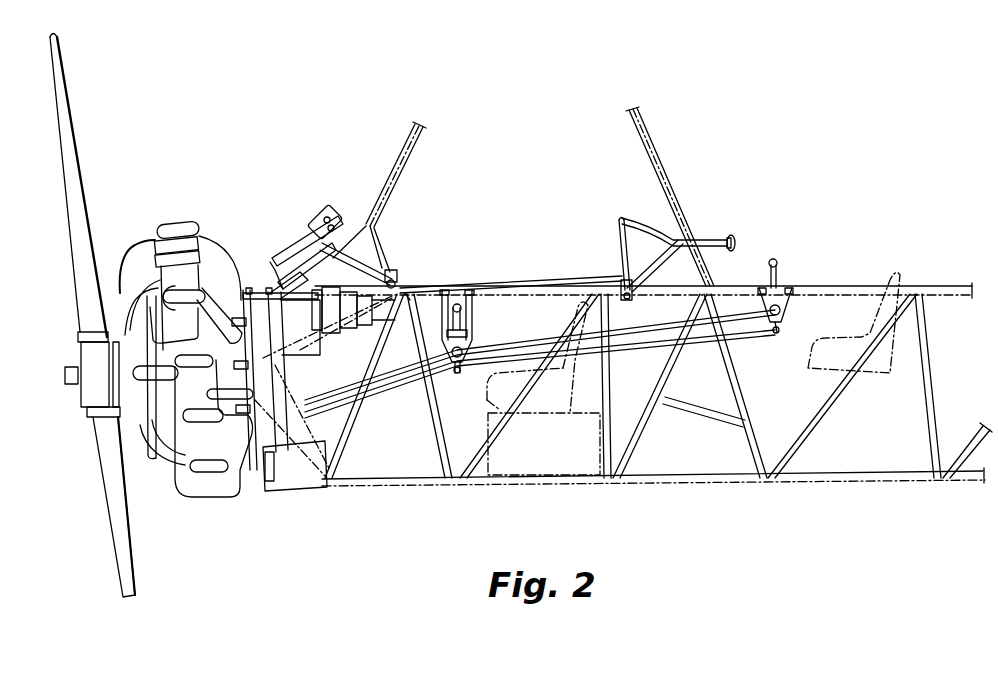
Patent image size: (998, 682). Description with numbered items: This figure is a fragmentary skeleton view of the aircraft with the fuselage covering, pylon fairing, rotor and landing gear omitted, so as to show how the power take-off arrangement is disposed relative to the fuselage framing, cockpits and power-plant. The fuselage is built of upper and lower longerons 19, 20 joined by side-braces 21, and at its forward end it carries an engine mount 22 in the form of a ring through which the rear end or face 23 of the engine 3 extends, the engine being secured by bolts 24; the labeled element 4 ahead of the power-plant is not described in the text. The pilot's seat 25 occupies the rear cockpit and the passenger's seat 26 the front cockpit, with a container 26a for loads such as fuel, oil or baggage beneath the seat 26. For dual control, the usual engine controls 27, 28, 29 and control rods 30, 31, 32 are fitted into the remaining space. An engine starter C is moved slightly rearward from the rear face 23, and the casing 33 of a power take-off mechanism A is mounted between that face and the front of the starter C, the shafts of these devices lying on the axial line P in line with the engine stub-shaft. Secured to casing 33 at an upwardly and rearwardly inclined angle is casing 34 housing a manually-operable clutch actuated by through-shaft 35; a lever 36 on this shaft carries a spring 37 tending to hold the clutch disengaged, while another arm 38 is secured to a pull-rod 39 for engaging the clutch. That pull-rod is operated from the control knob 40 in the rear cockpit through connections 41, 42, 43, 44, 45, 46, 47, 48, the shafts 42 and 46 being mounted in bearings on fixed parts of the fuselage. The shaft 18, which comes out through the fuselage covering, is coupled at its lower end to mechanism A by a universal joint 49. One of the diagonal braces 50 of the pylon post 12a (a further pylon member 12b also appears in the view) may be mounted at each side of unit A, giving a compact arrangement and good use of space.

The engine 3 is at (186, 359).
The propeller 4 is at (92, 316).
The pylon post 12a is at (408, 171).
The rear cabane strut 12b is at (648, 160).
The shaft 18 is at (333, 213).
The upper longeron 19 is at (823, 287).
The lower longeron 20 is at (667, 480).
The side-braces 21 is at (313, 442).
The engine mount 22 is at (250, 363).
The rear face of the engine 23 is at (273, 340).
The bolts 24 is at (262, 462).
The pilot's seat 25 is at (823, 363).
The passenger's seat 26 is at (567, 392).
The container 26a is at (525, 470).
The engine control 27 is at (461, 307).
The engine control 28 is at (470, 325).
The engine control 29 is at (460, 372).
The control rod 30 is at (622, 298).
The control rod 31 is at (508, 355).
The control rod 32 is at (613, 347).
The power take-off casing 33 is at (280, 296).
The clutch casing 34 is at (285, 261).
The through-shaft 35 is at (305, 243).
The lever 36 is at (313, 258).
The spring 37 is at (382, 252).
The lever or arm 38 is at (335, 226).
The pull-rod 39 is at (377, 237).
The control knob 40 is at (735, 233).
The connection 41 is at (395, 272).
The shaft 42 is at (407, 282).
The connection 43 is at (410, 293).
The connection 44 is at (487, 282).
The connection 45 is at (617, 277).
The shaft 46 is at (633, 287).
The connection 47 is at (620, 235).
The connection 48 is at (642, 230).
The universal joint 49 is at (325, 216).
The diagonal brace 50 is at (272, 280).
The mechanism A is at (290, 268).
The engine starter C is at (350, 318).
The axial line P is at (313, 308).